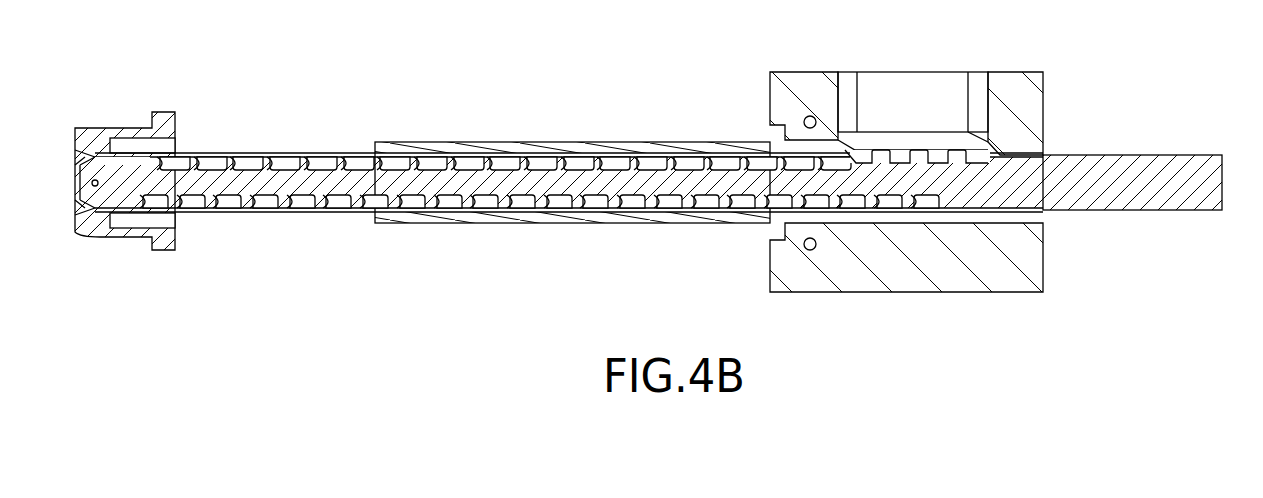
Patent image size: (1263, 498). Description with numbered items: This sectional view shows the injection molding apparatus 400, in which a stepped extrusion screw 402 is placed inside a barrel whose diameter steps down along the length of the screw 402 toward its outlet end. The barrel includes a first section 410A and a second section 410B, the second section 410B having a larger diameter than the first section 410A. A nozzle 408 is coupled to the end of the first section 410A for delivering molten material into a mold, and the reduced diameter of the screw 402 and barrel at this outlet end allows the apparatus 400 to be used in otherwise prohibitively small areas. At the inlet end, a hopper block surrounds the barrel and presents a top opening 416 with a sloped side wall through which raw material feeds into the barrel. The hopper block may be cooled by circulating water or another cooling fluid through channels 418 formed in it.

The injection molding apparatus 400 is at (666, 190).
The stepped extrusion screw 402 is at (1172, 170).
The nozzle 408 is at (128, 235).
The first section 410A is at (285, 212).
The second section 410B is at (478, 220).
The top opening 416 is at (923, 78).
The channels 418 is at (812, 116).